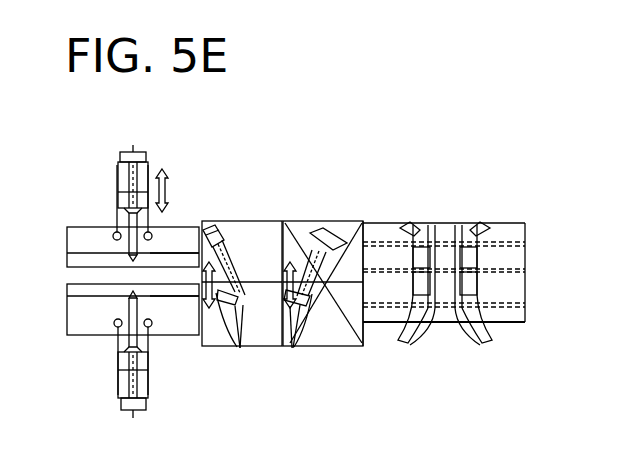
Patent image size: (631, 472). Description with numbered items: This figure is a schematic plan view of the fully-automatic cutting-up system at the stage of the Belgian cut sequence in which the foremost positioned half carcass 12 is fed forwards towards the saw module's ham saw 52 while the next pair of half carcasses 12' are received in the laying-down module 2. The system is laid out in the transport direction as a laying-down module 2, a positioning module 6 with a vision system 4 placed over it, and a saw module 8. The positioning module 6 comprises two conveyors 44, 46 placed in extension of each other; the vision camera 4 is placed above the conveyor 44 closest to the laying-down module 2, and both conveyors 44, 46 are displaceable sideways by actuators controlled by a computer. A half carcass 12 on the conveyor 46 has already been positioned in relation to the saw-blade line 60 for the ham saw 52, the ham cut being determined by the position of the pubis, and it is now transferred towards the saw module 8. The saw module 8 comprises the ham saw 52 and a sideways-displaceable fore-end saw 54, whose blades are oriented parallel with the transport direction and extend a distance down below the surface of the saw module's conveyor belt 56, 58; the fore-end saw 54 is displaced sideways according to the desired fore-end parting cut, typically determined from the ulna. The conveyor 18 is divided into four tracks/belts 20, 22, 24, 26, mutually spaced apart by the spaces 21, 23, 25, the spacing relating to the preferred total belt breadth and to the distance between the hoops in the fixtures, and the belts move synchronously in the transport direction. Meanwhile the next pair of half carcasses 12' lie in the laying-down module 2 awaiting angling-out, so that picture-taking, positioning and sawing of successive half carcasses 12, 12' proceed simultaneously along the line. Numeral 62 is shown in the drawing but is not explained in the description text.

The laying-down module 2 is at (494, 232).
The vision system 4 is at (349, 224).
The positioning module 6 is at (290, 200).
The saw module 8 is at (185, 126).
The half carcasses 12 is at (275, 262).
The half carcasses of the next pair 12' is at (459, 262).
The conveyor 18 is at (471, 377).
The track/belt 20 is at (494, 211).
The space 21 is at (489, 231).
The track/belt 22 is at (494, 254).
The space 23 is at (490, 279).
The track/belt 24 is at (494, 302).
The space 25 is at (490, 321).
The track/belt 26 is at (494, 342).
The positioning conveyor 44 is at (336, 337).
The positioning conveyor 46 is at (269, 323).
The ham saw 52 is at (127, 377).
The fore-end saw 54 is at (130, 187).
The conveyor belt of the saw module 56 is at (157, 247).
The conveyor belt of the saw module 58 is at (160, 317).
The saw-blade line 60 is at (207, 350).
The upper guide 62 is at (167, 253).